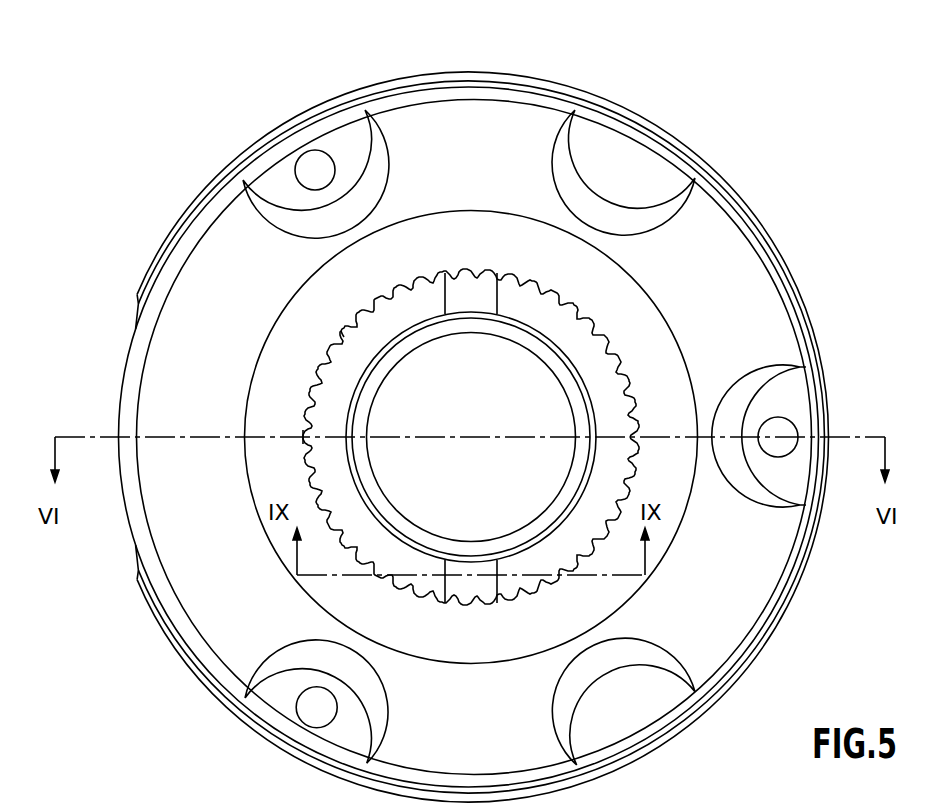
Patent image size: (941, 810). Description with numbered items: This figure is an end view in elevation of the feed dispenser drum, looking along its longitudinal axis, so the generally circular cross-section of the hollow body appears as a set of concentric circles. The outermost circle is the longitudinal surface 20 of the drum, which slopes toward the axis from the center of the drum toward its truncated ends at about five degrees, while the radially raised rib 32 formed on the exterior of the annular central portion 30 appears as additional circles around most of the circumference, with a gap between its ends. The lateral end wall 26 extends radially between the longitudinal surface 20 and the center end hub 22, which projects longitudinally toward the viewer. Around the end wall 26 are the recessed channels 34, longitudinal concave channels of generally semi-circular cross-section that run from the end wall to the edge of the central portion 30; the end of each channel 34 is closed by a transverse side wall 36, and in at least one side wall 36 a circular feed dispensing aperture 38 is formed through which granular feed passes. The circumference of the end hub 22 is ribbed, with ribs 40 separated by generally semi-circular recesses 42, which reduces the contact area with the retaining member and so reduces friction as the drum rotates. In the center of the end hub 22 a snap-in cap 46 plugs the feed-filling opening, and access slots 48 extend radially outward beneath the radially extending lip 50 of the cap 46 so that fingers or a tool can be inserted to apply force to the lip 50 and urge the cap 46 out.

The longitudinal surface 20 is at (545, 137).
The center end hub 22 is at (428, 298).
The lateral end wall 26 is at (518, 230).
The central portion 30 is at (129, 358).
The radially raised rib 32 is at (139, 318).
The recessed channel 34 is at (636, 216).
The transverse side wall 36 is at (348, 136).
The feed dispensing aperture 38 is at (316, 168).
The ribs 40 is at (332, 342).
The recesses 42 is at (350, 312).
The snap-in cap 46 is at (523, 390).
The access slots 48 is at (470, 290).
The radially extending lip 50 is at (573, 390).